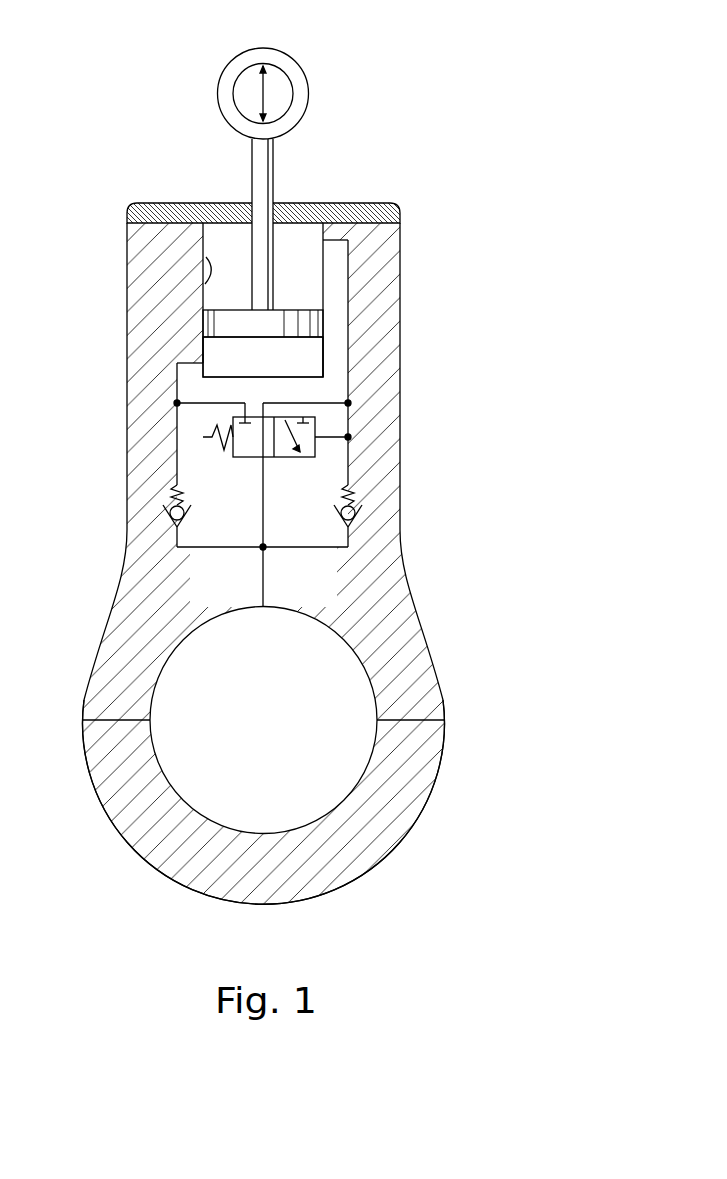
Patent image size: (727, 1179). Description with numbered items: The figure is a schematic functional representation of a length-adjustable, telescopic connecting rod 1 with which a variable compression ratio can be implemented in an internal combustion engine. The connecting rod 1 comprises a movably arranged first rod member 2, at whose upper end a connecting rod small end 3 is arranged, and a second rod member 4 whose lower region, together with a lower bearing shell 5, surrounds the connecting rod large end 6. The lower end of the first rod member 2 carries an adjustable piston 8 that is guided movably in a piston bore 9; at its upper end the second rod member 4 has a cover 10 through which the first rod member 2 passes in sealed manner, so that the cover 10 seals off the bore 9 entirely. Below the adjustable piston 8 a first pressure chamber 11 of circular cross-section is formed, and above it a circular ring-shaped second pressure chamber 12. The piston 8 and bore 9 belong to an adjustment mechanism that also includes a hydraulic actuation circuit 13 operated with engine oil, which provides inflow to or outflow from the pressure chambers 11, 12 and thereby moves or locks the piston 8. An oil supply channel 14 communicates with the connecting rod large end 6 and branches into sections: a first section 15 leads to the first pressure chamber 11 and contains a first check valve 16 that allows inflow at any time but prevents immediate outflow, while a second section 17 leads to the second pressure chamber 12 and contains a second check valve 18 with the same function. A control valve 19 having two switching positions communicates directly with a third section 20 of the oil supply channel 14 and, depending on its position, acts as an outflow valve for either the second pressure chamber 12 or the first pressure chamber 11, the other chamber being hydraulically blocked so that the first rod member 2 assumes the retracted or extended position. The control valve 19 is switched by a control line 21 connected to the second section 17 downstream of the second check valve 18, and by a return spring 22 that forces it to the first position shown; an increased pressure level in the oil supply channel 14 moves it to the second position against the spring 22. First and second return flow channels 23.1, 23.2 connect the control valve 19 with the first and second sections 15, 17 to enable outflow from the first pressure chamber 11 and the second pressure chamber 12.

The telescopic connecting rod 1 is at (338, 476).
The first rod member 2 is at (265, 166).
The connecting rod small end 3 is at (302, 92).
The second rod member 4 is at (400, 305).
The lower bearing shell 5 is at (113, 778).
The connecting rod large end 6 is at (448, 797).
The adjustable piston 8 is at (196, 322).
The piston bore 9 is at (198, 283).
The cover 10 is at (398, 213).
The first pressure chamber 11 is at (310, 360).
The second pressure chamber 12 is at (222, 238).
The hydraulic actuation circuit 13 is at (168, 412).
The oil supply channel 14 is at (263, 585).
The first section 15 is at (173, 532).
The first check valve 16 is at (160, 503).
The second section 17 is at (350, 547).
The second check valve 18 is at (357, 513).
The control valve 19 is at (362, 450).
The third section 20 is at (258, 550).
The control line 21 is at (350, 437).
The return spring 22 is at (205, 432).
The first return flow channel 23.1 is at (197, 390).
The second return flow channel 23.2 is at (318, 402).